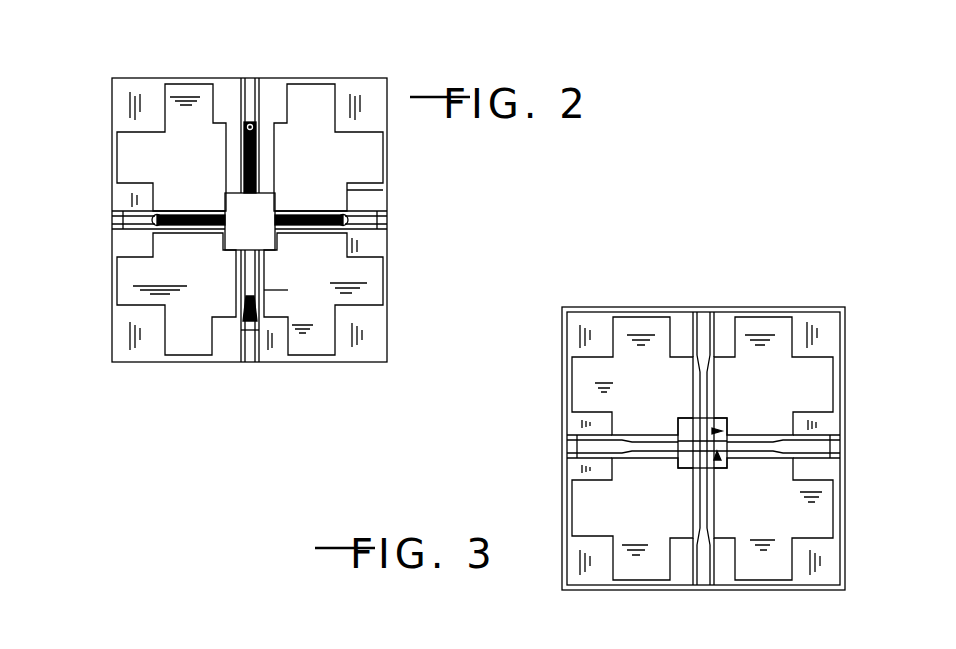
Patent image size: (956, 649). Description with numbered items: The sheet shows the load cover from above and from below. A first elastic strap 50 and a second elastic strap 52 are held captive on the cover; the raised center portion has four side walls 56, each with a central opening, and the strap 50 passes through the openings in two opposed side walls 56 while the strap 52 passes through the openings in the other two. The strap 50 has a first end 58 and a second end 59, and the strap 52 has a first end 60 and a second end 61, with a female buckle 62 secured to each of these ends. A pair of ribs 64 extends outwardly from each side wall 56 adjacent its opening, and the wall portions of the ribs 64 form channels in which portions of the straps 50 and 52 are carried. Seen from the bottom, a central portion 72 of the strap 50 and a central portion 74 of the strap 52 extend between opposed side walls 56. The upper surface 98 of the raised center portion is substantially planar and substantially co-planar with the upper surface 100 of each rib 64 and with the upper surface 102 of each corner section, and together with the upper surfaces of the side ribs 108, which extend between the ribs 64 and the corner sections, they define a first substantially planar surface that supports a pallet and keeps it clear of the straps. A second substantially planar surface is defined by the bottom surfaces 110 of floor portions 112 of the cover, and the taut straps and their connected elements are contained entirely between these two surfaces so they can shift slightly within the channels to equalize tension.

In FIG. 2, the first elastic strap 50 is at (303, 230).
In FIG. 3, the first elastic strap 50 is at (719, 462).
In FIG. 2, the second elastic strap 52 is at (259, 154).
In FIG. 3, the second elastic strap 52 is at (727, 432).
In FIG. 2, the side walls 56 is at (276, 206).
In FIG. 3, the side walls 56 is at (728, 426).
In FIG. 2, the first end 58 is at (325, 198).
In FIG. 2, the second end 59 is at (182, 212).
In FIG. 2, the first end 60 is at (260, 142).
In FIG. 2, the second end 61 is at (243, 297).
In FIG. 2, the female buckle 62 is at (252, 122).
In FIG. 2, the ribs 64 is at (227, 110).
In FIG. 3, the central portion 72 is at (692, 470).
In FIG. 3, the central portion 74 is at (695, 435).
In FIG. 2, the upper surface 98 is at (266, 234).
In FIG. 2, the upper surface 100 is at (187, 210).
In FIG. 2, the upper surface 102 is at (137, 95).
In FIG. 2, the side ribs 108 is at (396, 189).
In FIG. 3, the bottom surfaces 110 is at (637, 322).
In FIG. 3, the floor portions 112 is at (812, 385).